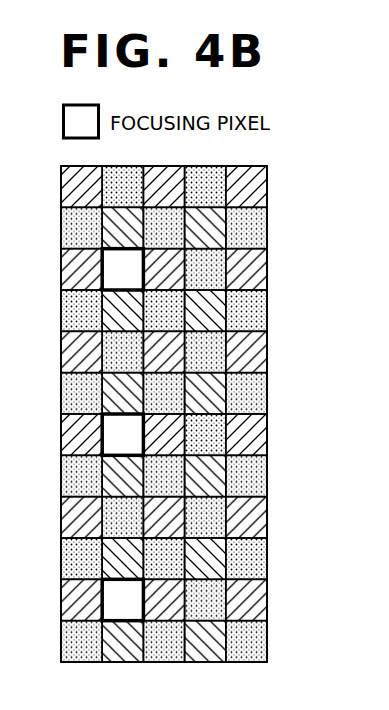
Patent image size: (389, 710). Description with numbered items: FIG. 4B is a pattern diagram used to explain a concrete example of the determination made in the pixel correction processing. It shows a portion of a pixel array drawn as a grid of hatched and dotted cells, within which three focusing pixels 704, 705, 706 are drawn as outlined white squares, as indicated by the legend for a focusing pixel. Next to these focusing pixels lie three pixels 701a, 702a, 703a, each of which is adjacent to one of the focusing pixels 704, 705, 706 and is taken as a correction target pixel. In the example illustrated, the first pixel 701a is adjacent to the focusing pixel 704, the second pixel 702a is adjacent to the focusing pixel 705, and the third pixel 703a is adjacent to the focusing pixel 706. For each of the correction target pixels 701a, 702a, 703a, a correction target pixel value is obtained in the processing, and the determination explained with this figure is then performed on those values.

The correction target pixel 701a is at (178, 269).
The correction target pixel 702a is at (178, 434).
The correction target pixel 703a is at (178, 599).
The focusing pixel 704 is at (115, 273).
The focusing pixel 705 is at (115, 438).
The focusing pixel 706 is at (115, 603).